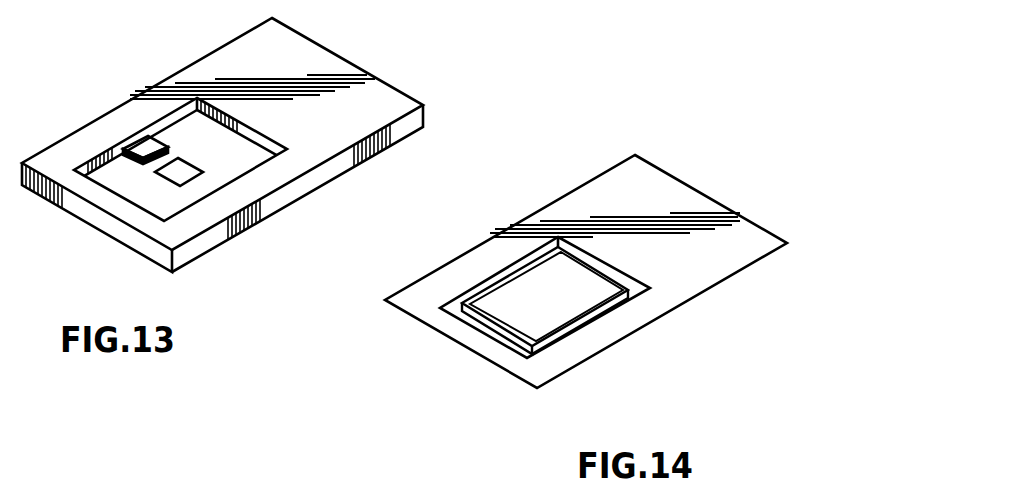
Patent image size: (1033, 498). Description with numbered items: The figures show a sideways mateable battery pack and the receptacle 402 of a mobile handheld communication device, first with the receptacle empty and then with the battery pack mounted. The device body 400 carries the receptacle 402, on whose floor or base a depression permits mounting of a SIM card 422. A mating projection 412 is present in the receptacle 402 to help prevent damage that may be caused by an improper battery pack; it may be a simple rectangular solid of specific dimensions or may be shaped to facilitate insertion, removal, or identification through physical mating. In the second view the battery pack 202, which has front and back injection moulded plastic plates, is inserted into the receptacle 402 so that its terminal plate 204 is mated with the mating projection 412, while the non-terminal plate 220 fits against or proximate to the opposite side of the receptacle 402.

In FIG. 13, the substrate 400 is at (366, 100).
In FIG. 14, the substrate 400 is at (688, 272).
In FIG. 13, the receptacle 402 is at (165, 201).
In FIG. 13, the mating projection 412 is at (133, 158).
In FIG. 13, the SIM card 422 is at (187, 177).
In FIG. 14, the terminal plate 204 is at (502, 274).
In FIG. 14, the module 202 is at (507, 318).
In FIG. 14, the cover 220 is at (586, 321).